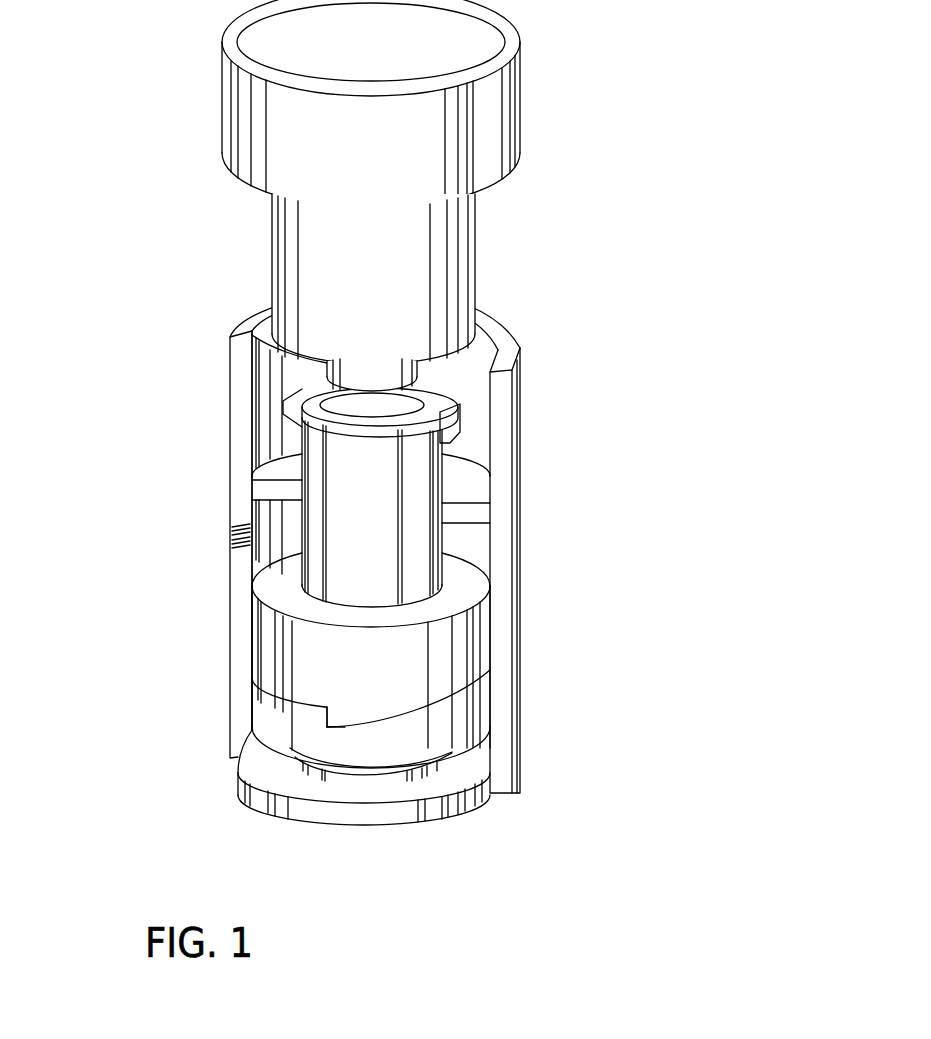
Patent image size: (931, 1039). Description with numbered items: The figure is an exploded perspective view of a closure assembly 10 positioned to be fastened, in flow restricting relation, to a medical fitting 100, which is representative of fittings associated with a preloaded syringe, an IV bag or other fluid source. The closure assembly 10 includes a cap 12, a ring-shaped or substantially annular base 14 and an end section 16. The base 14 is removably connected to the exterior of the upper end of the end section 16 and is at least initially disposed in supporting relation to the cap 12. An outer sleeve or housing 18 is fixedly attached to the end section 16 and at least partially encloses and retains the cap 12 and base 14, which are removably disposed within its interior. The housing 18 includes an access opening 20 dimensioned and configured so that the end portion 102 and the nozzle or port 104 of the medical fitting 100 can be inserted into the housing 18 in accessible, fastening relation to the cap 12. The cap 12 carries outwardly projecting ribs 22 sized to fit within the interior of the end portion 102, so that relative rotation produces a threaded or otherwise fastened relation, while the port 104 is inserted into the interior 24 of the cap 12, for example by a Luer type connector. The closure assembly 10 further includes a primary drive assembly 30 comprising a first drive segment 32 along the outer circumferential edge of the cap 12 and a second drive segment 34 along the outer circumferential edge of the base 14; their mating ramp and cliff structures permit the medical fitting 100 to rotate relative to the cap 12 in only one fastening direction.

The closure assembly 10 is at (648, 452).
The cap 12 is at (445, 543).
The base 14 is at (460, 720).
The end section 16 is at (478, 800).
The housing 18 is at (240, 615).
The access opening 20 is at (505, 352).
The ribs 22 is at (447, 410).
The interior 24 is at (294, 414).
The primary drive assembly 30 is at (375, 710).
The first drive segment 32 is at (287, 692).
The second drive segment 34 is at (407, 727).
The medical fitting 100 is at (217, 214).
The end portion 102 is at (478, 238).
The nozzle or port 104 is at (327, 362).